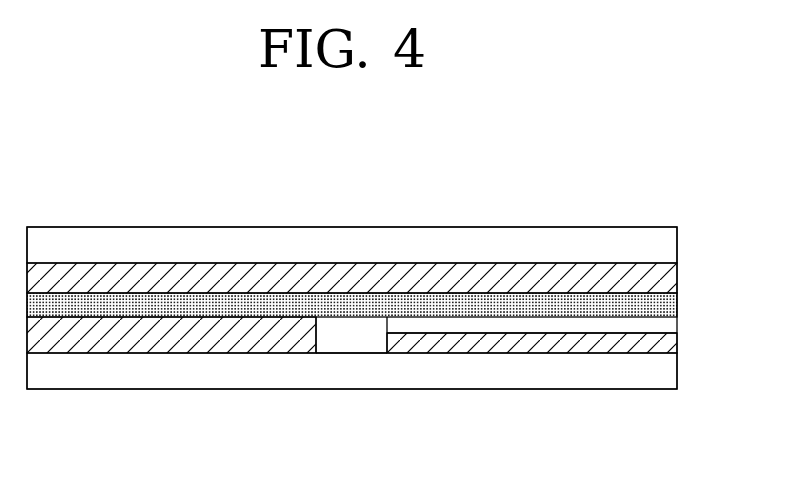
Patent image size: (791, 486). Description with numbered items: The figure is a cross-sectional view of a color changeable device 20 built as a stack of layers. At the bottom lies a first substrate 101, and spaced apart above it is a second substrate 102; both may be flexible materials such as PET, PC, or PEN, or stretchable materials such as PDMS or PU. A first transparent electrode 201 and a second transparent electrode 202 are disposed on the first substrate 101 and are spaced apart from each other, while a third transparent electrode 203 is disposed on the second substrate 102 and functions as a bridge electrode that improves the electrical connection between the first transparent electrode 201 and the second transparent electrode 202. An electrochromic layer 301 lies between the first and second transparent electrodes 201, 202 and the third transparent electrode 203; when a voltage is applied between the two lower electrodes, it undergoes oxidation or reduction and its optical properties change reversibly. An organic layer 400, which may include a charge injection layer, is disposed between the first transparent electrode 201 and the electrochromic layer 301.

The color changeable device 20 is at (655, 189).
The second substrate 102 is at (668, 244).
The third transparent electrode 203 is at (668, 275).
The electrochromic layer 301 is at (668, 300).
The organic layer 400 is at (668, 325).
The second transparent electrode 202 is at (192, 347).
The first transparent electrode 201 is at (520, 345).
The first substrate 101 is at (668, 370).